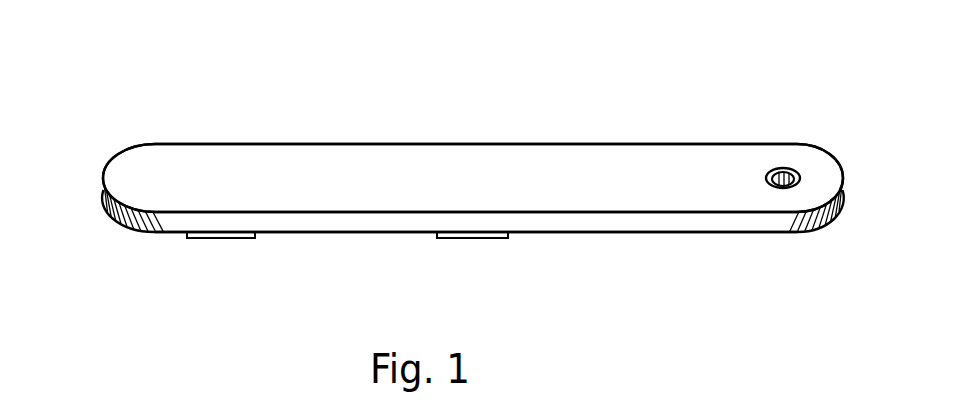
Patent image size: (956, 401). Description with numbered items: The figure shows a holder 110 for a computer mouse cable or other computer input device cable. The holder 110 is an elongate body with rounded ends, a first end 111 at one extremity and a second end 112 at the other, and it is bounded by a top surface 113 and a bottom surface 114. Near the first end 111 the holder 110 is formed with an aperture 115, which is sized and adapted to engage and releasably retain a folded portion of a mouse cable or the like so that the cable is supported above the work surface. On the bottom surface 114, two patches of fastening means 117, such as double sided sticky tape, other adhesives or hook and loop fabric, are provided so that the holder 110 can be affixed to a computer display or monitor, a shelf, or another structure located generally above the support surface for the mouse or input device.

The holder 110 is at (463, 125).
The first end 111 is at (843, 193).
The second end 112 is at (110, 198).
The top surface 113 is at (176, 178).
The bottom surface 114 is at (343, 232).
The aperture 115 is at (782, 177).
The fastening means 117 is at (218, 238).